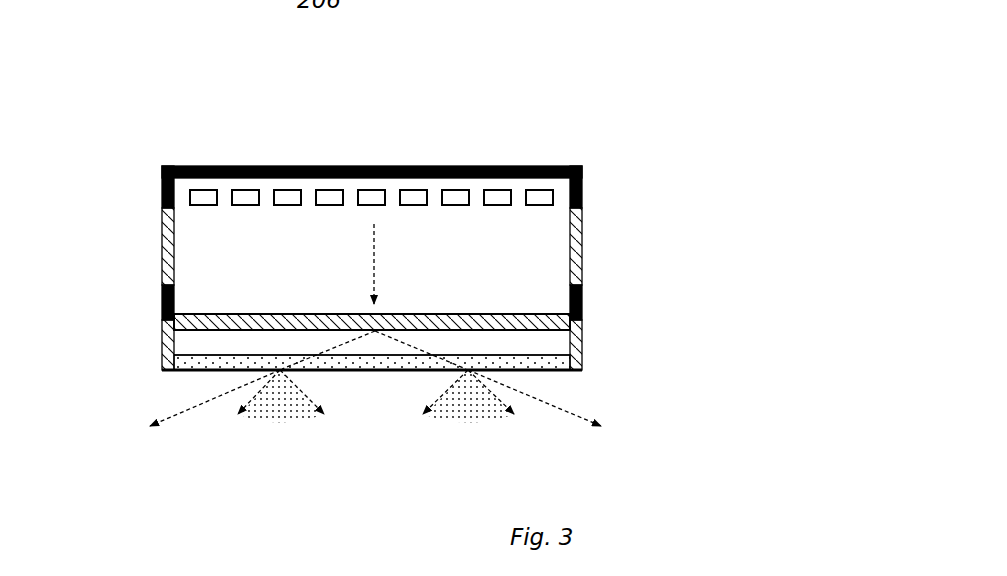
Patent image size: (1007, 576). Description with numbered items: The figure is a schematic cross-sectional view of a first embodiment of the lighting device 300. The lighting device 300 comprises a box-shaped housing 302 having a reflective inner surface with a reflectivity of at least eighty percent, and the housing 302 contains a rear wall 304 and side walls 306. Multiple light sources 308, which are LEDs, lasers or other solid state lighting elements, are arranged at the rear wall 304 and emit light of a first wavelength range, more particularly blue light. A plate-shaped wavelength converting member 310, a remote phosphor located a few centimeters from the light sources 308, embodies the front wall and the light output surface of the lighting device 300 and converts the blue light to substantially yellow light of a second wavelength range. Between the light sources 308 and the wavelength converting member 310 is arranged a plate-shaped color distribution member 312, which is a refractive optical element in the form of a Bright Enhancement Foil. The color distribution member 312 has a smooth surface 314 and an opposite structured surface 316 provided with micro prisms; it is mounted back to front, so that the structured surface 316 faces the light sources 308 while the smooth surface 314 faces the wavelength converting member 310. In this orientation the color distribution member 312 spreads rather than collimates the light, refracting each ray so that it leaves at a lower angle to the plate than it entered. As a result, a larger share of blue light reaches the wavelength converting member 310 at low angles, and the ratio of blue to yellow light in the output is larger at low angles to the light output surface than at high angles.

The lighting device 300 is at (189, 97).
The housing 302 is at (158, 256).
The rear wall 304 is at (352, 166).
The side walls 306 is at (162, 212).
The light sources 308 is at (246, 205).
The wavelength converting member 310 is at (210, 363).
The color distribution member 312 is at (305, 301).
The smooth surface 314 is at (483, 332).
The structured surface 316 is at (440, 314).